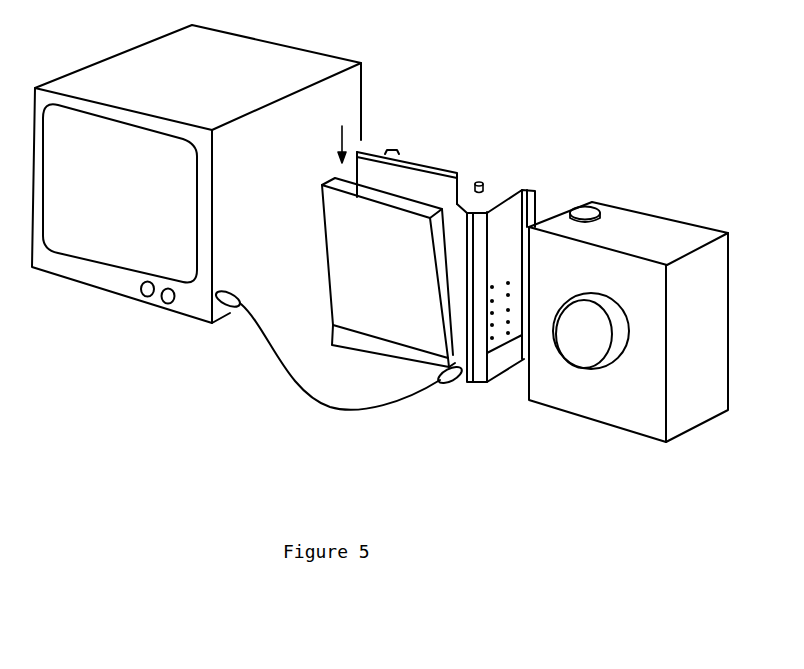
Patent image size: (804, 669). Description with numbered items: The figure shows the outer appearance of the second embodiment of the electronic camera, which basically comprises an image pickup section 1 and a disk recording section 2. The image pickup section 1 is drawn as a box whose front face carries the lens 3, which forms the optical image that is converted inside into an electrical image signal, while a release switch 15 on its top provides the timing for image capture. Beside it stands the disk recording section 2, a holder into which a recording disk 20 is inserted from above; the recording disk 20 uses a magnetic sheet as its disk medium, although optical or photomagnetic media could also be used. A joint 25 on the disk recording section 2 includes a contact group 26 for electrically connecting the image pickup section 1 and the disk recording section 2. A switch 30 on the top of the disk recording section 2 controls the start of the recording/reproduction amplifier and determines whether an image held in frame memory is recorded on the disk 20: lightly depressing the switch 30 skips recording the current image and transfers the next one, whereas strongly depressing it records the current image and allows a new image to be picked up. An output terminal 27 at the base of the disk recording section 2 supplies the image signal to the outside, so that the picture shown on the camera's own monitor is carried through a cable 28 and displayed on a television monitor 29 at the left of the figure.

The image pickup section 1 is at (668, 232).
The disk recording section 2 is at (505, 191).
The lens 3 is at (585, 355).
The release switch 15 is at (588, 210).
The recording disk 20 is at (398, 154).
The joint 25 is at (504, 348).
The contact group 26 is at (492, 313).
The output terminal 27 is at (447, 388).
The cable 28 is at (262, 330).
The television monitor 29 is at (323, 62).
The switch 30 is at (479, 181).